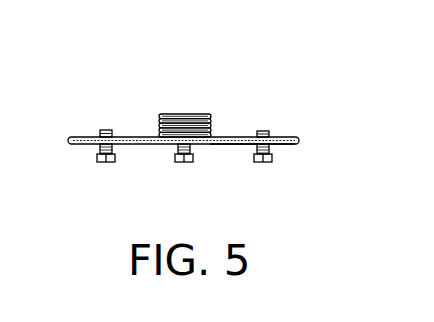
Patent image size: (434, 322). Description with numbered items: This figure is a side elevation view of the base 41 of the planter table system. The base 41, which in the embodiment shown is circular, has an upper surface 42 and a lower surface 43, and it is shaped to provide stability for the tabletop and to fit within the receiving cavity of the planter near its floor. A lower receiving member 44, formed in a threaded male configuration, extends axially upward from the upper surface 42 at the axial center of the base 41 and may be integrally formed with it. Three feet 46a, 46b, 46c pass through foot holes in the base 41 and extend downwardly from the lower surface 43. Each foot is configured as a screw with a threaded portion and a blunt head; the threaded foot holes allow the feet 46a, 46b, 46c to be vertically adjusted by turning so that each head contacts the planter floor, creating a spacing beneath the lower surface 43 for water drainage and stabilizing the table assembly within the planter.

The base 41 is at (110, 60).
The upper surface 42 is at (232, 137).
The lower surface 43 is at (283, 145).
The lower receiving member 44 is at (178, 114).
The foot 46a is at (178, 163).
The foot 46b is at (103, 163).
The foot 46c is at (265, 163).